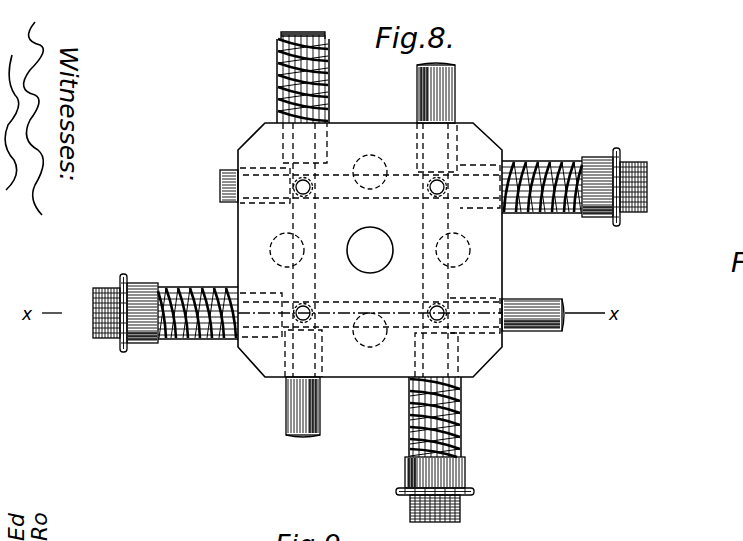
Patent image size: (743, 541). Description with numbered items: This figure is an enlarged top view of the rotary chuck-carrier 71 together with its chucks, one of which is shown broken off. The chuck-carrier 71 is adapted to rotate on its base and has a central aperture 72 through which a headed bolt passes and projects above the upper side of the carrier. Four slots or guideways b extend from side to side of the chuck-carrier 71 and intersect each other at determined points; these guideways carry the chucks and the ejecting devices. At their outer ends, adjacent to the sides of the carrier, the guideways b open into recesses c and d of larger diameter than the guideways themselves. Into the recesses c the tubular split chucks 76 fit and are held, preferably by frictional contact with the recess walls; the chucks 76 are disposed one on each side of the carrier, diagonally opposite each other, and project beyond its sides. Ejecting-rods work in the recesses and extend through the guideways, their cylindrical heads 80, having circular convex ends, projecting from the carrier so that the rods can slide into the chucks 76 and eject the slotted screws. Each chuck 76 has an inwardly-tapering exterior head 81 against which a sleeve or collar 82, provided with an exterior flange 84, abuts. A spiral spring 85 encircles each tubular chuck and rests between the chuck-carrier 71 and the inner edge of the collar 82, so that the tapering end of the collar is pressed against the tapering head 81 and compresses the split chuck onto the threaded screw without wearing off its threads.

The rotary chuck-carrier 71 is at (503, 290).
The central aperture 72 is at (370, 250).
The tubular split chuck 76 is at (371, 361).
The cylindrical head 80 is at (458, 72).
The inwardly-tapering exterior head 81 is at (645, 168).
The sleeve or collar 82 is at (605, 220).
The exterior flange 84 is at (618, 150).
The spiral spring 85 is at (282, 78).
The guideway b is at (298, 218).
The recess c is at (325, 128).
The recess d is at (243, 172).